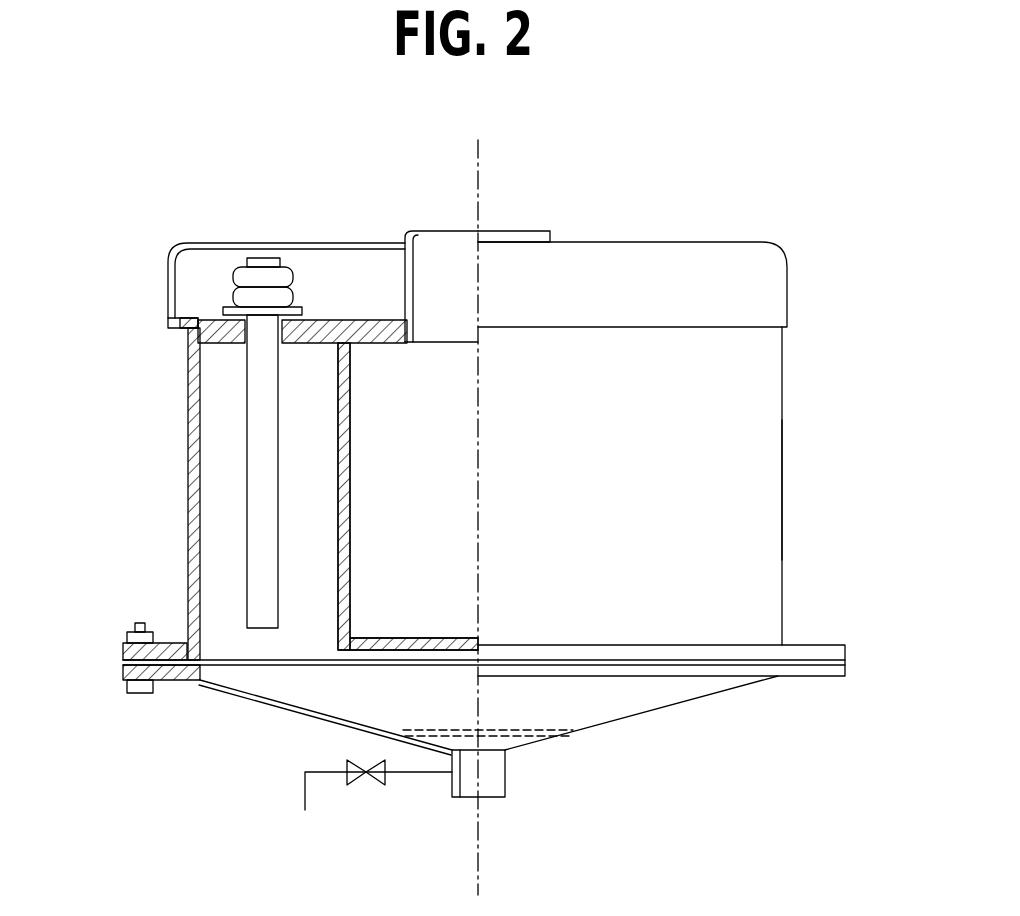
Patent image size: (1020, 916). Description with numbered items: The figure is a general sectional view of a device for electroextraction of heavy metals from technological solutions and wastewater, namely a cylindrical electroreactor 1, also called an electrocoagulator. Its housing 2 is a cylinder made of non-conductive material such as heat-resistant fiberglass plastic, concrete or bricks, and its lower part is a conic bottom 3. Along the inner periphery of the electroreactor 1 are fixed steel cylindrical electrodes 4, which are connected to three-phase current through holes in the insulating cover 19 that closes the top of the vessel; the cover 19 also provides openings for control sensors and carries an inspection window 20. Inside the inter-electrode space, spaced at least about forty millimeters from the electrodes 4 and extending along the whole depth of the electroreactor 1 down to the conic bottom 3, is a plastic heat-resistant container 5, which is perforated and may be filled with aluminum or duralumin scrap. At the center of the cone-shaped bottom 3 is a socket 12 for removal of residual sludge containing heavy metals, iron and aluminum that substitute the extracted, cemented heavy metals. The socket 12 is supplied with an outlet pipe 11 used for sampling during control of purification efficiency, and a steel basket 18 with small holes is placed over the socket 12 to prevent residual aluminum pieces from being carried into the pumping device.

The electroreactor 1 is at (712, 452).
The housing 2 is at (782, 497).
The conic bottom 3 is at (678, 695).
The steel cylindrical electrode 4 is at (260, 420).
The plastic heat-resistant container 5 is at (348, 545).
The outlet pipe 11 is at (348, 787).
The socket 12 is at (505, 785).
The steel basket 18 is at (472, 740).
The insulating cover 19 is at (678, 265).
The inspection window 20 is at (440, 267).